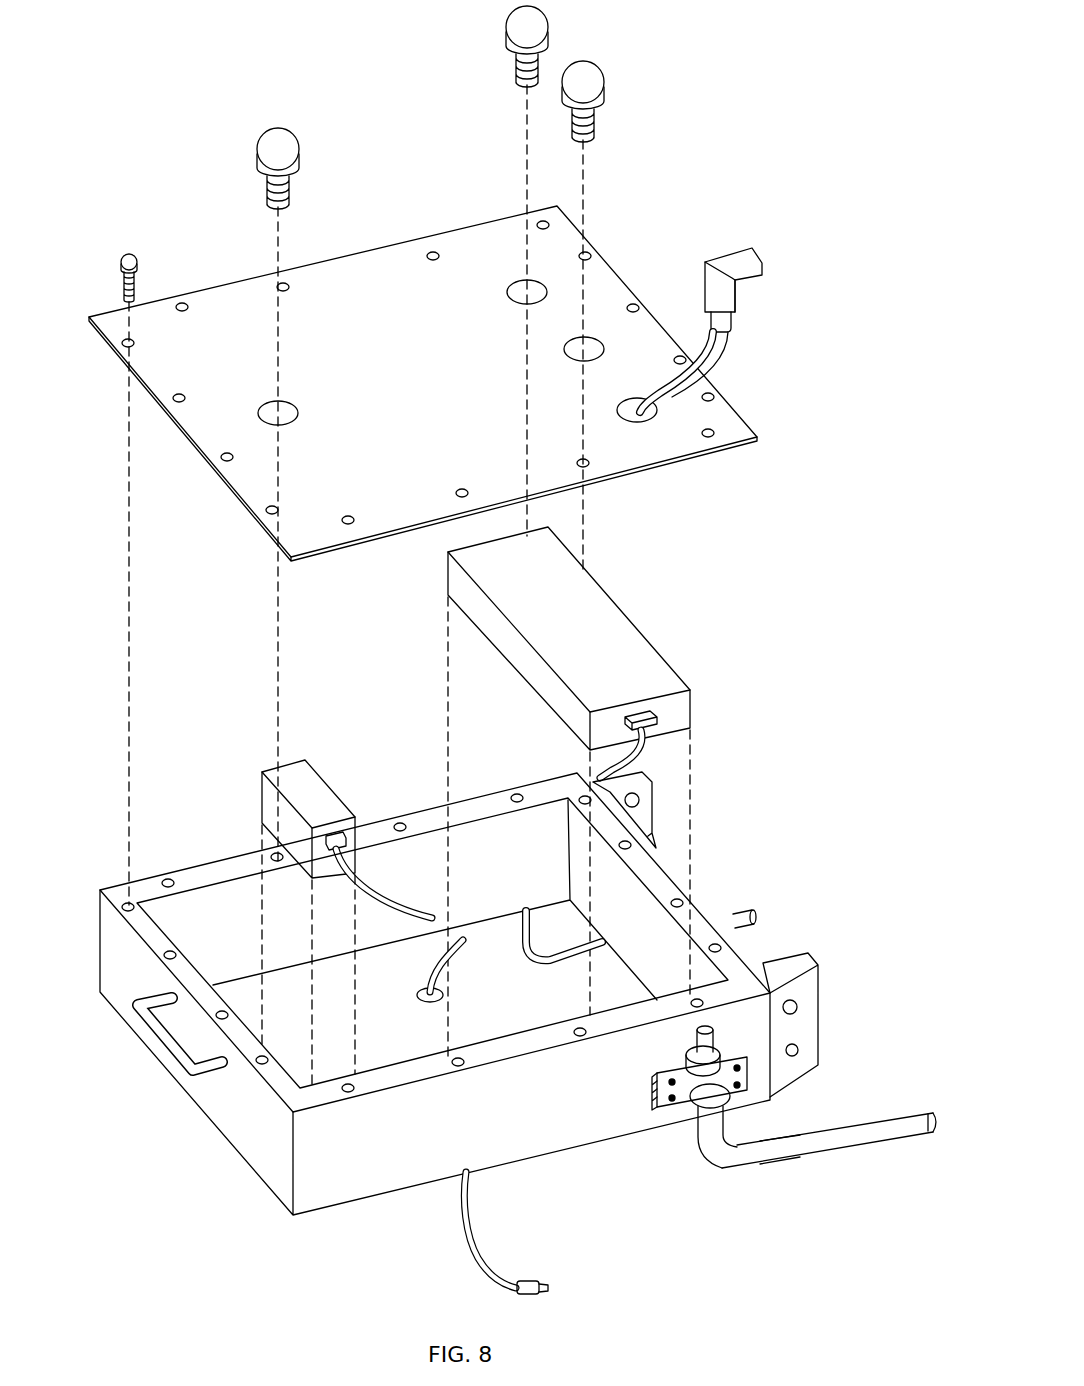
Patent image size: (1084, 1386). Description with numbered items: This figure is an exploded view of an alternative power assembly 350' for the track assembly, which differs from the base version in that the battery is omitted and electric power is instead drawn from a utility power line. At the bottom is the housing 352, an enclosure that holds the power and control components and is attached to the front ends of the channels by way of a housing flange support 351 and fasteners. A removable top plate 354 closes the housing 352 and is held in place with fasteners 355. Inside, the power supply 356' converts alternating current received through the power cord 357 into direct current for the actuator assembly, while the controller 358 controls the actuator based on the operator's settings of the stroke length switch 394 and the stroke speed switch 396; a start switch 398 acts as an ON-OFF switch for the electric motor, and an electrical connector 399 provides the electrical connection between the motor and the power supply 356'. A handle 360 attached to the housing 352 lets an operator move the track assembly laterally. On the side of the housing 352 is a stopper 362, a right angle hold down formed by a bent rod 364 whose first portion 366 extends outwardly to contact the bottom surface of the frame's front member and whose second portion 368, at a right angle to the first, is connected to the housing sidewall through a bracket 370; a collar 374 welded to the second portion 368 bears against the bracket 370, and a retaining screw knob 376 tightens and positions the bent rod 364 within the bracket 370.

The power assembly 350' is at (790, 140).
The housing flange support 351 is at (654, 853).
The housing 352 is at (368, 1175).
The removable top plate 354 is at (735, 432).
The fasteners 355 is at (129, 252).
The power supply 356' is at (570, 793).
The power cord 357 is at (492, 1213).
The controller 358 is at (315, 790).
The handle 360 is at (163, 1040).
The stopper 362 is at (750, 905).
The bent rod 364 is at (937, 1125).
The first portion 366 is at (790, 1163).
The second portion 368 is at (713, 1037).
The bracket 370 is at (750, 1072).
The collar 374 is at (721, 1053).
The retaining screw knob 376 is at (712, 1100).
The stroke length switch 394 is at (506, 38).
The stroke speed switch 396 is at (605, 88).
The start switch 398 is at (300, 152).
The electrical connector 399 is at (762, 258).